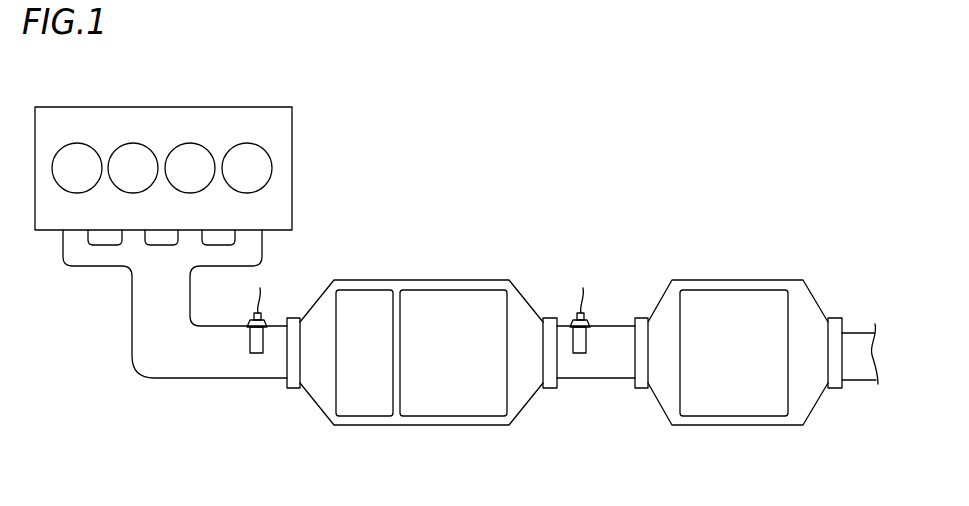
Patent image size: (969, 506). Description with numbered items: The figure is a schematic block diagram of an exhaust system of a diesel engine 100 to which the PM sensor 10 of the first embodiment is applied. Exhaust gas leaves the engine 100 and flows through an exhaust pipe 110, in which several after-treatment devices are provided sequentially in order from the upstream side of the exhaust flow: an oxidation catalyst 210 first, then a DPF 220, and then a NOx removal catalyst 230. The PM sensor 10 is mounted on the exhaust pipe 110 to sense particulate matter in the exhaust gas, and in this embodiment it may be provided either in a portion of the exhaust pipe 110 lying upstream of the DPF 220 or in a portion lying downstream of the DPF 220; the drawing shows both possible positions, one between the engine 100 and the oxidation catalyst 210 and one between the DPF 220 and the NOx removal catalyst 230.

The engine 100 is at (233, 120).
The exhaust pipe 110 is at (190, 380).
The PM sensor 10 is at (268, 300).
The oxidation catalyst 210 is at (383, 362).
The DPF 220 is at (472, 362).
The NOx removal catalyst 230 is at (755, 364).